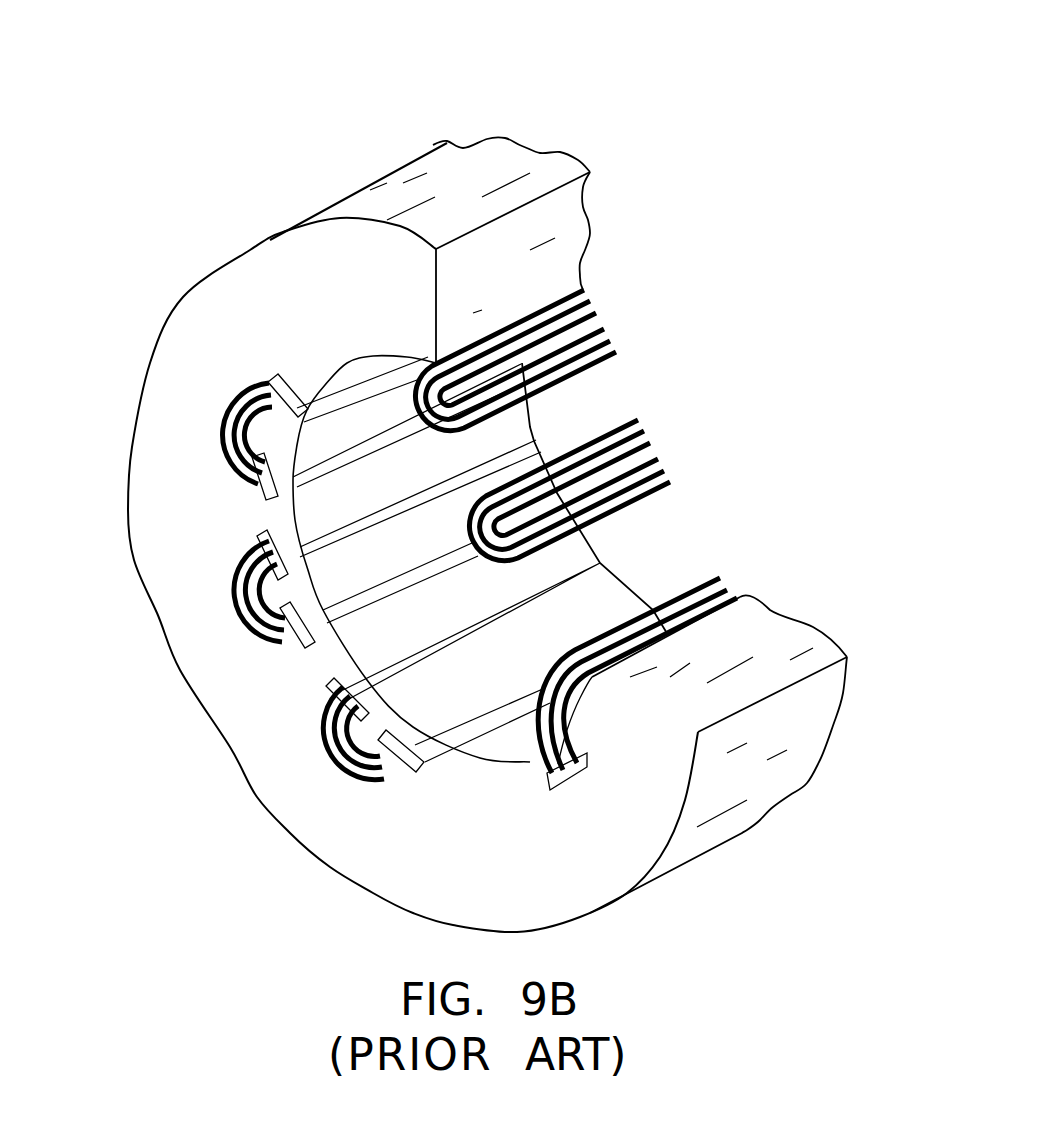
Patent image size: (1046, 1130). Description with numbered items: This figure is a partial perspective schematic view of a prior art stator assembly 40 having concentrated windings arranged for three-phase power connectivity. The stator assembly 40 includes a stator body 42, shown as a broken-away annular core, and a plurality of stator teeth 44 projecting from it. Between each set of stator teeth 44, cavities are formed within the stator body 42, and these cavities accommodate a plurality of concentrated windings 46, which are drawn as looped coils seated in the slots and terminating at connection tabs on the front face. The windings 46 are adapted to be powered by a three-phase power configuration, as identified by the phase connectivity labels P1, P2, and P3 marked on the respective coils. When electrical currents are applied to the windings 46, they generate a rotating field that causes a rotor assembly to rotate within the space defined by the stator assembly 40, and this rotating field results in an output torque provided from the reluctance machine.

The stator assembly 40 is at (200, 198).
The stator body 42 is at (540, 188).
The stator teeth 44 is at (297, 503).
The concentrated windings 46 is at (222, 427).
The phase connectivity P1 is at (247, 390).
The phase connectivity P2 is at (260, 633).
The phase connectivity P3 is at (323, 203).